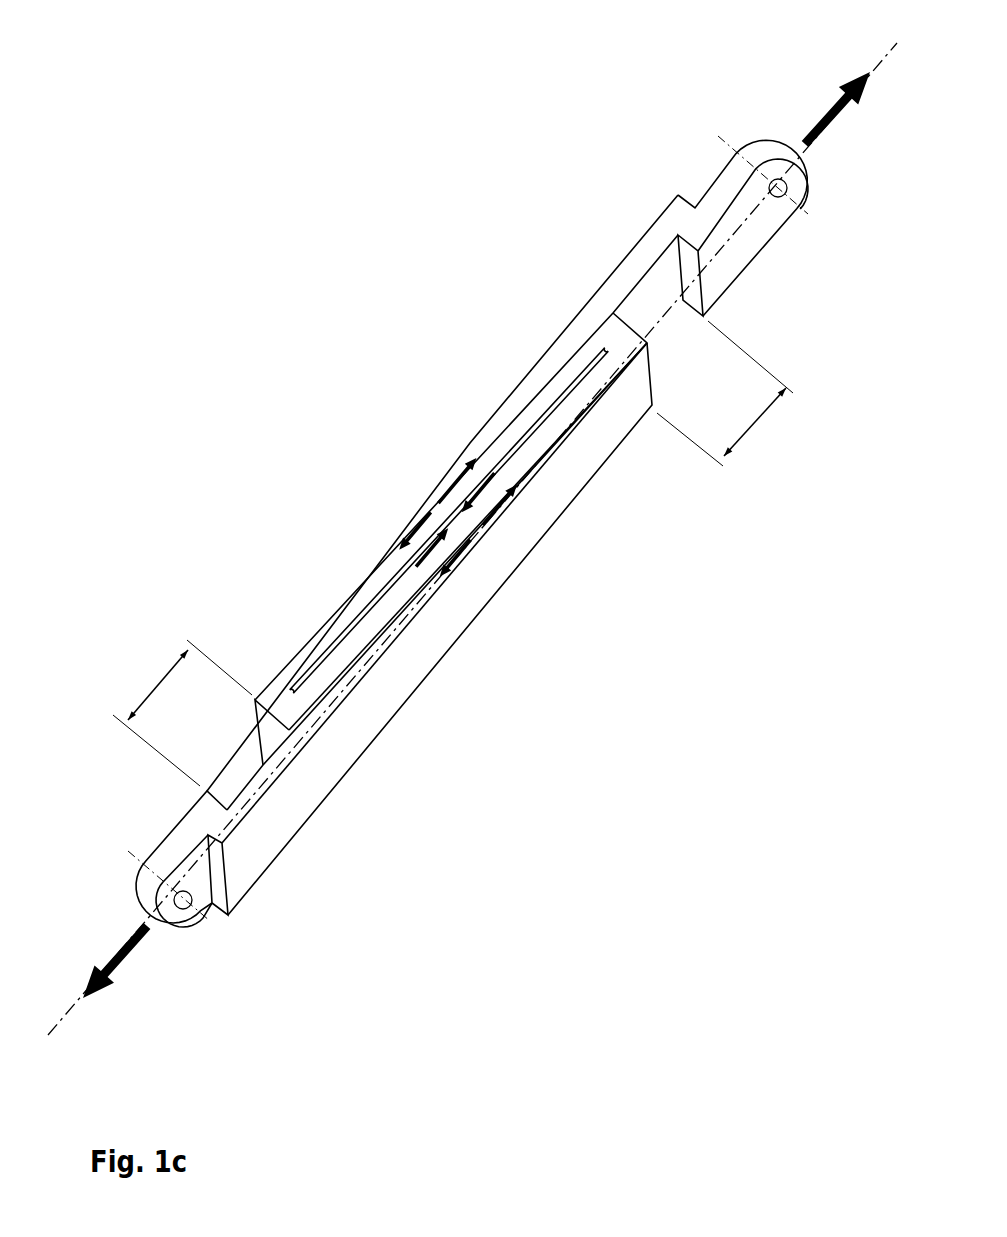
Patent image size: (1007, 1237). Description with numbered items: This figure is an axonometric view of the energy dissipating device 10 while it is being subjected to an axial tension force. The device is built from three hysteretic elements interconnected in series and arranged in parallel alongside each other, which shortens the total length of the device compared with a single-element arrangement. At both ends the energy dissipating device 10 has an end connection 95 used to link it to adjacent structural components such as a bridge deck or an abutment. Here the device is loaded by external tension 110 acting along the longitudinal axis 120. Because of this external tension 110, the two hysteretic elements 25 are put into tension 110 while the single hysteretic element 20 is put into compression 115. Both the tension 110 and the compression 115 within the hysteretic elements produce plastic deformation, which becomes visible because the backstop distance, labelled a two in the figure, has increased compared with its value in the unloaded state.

The energy dissipating device 10 is at (530, 325).
The hysteretic element 20 is at (357, 629).
The hysteretic elements 25 is at (418, 602).
The end connection 95 is at (784, 193).
The external tension 110 is at (822, 117).
The compression 115 is at (490, 476).
The longitudinal axis 120 is at (889, 51).